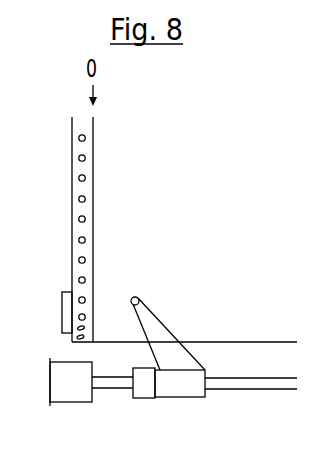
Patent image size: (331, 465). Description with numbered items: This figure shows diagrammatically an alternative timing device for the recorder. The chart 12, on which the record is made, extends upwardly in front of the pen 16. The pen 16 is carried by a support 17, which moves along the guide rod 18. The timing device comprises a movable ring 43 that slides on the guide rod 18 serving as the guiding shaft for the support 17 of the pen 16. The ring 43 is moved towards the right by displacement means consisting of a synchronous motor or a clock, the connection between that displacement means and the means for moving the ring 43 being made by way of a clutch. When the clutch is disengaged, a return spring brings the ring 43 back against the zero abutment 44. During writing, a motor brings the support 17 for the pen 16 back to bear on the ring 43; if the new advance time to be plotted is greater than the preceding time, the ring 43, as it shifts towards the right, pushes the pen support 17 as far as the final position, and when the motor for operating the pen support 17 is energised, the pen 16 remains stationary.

The chart 12 is at (104, 202).
The pen 16 is at (138, 296).
The support for the pen 17 is at (187, 394).
The guide rod 18 is at (257, 383).
The movable ring 43 is at (141, 398).
The zero abutment 44 is at (72, 398).